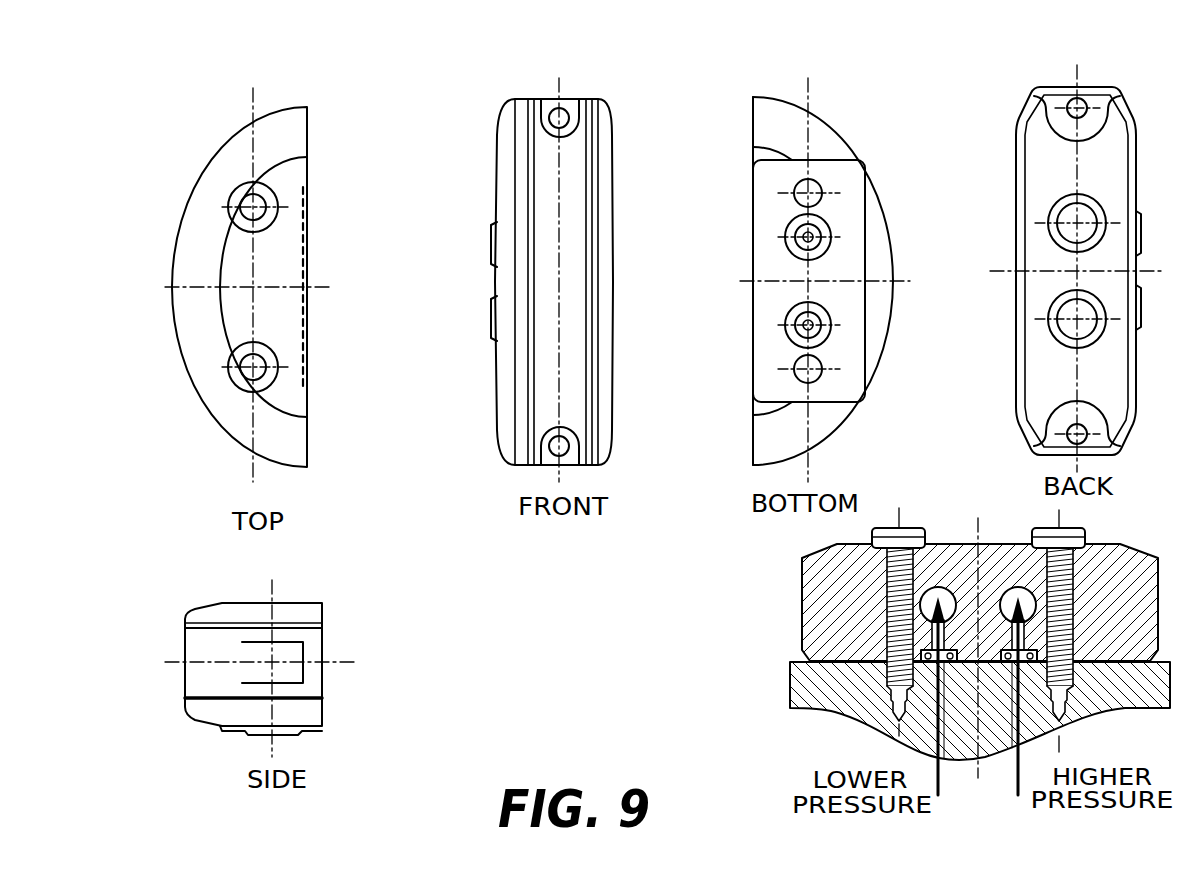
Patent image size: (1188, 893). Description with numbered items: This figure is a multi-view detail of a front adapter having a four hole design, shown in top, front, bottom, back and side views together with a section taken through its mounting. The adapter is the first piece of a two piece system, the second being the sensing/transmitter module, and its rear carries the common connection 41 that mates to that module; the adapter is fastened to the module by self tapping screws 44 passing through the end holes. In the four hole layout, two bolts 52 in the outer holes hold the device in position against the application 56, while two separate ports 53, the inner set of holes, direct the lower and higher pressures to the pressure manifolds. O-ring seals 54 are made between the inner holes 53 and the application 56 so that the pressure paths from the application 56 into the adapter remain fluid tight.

The common connection 41 is at (1056, 204).
The self tapping screw 44 is at (561, 108).
The bolt 52 is at (897, 545).
The port 53 is at (1005, 748).
The O-ring seal 54 is at (791, 309).
The application 56 is at (830, 699).